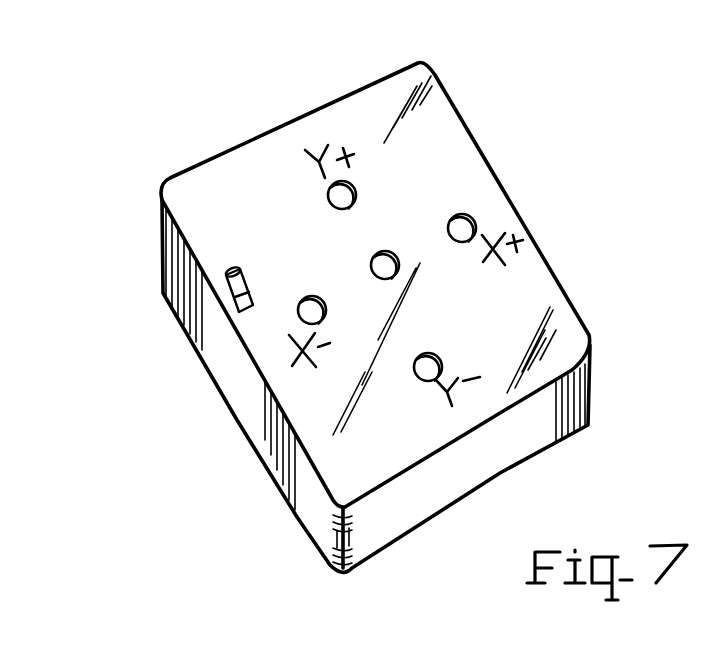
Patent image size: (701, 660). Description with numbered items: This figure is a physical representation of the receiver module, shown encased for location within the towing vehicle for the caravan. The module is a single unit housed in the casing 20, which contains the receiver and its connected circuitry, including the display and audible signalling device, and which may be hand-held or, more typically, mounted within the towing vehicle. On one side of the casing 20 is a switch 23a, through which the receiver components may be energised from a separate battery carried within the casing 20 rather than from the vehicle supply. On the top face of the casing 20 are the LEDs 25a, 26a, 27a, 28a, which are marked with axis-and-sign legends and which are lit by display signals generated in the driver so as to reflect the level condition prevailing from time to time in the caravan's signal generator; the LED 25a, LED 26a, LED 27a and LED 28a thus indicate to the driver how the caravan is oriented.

The casing 20 is at (465, 148).
The switch 23a is at (232, 272).
The LED 25a is at (464, 228).
The LED 26a is at (305, 313).
The LED 27a is at (352, 183).
The LED 28a is at (427, 375).